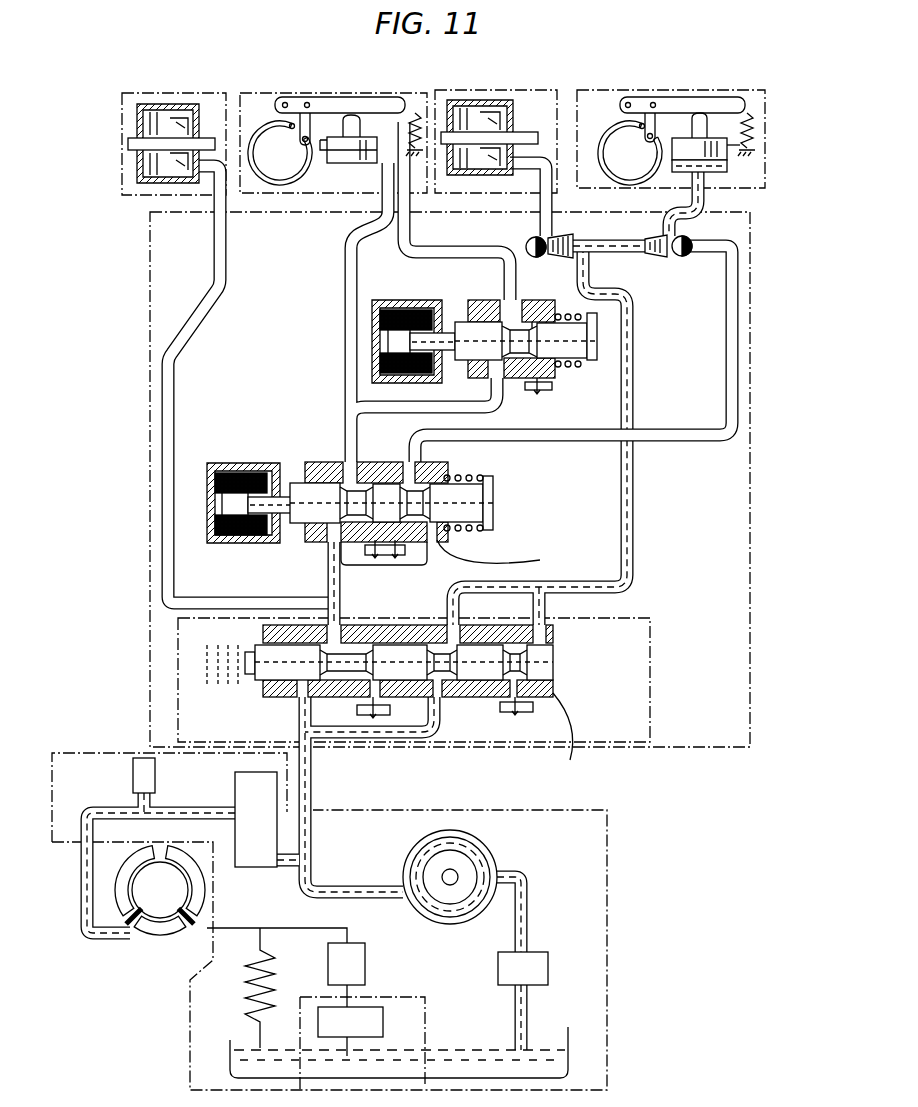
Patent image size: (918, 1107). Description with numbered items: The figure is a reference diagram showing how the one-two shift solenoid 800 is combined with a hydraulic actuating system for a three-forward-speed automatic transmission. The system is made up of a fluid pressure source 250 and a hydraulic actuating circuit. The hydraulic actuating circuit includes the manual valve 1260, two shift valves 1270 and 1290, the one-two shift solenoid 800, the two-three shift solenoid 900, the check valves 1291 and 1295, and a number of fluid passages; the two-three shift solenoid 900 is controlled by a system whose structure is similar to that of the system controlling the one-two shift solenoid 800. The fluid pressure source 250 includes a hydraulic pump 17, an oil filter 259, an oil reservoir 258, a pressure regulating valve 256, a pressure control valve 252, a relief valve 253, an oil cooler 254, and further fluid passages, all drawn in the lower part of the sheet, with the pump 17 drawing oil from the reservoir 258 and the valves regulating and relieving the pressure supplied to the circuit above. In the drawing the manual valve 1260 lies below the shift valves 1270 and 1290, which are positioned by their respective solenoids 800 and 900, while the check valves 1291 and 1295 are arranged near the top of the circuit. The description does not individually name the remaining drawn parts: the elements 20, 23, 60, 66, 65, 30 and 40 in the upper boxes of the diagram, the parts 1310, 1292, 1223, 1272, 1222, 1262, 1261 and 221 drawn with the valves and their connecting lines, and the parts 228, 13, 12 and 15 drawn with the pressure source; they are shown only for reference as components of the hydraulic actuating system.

The front clutch servo 20 is at (160, 123).
The clutch piston 23 is at (181, 104).
The solenoid valve assembly 60 is at (332, 128).
The solenoid 66 is at (373, 128).
The return spring ring 65 is at (316, 168).
The rear clutch servo 30 is at (463, 92).
The solenoid valve assembly 40 is at (648, 93).
The 2-3 shift solenoid 900 is at (427, 292).
The fluid passage 1310 is at (517, 300).
The check valve 1291 is at (563, 236).
The check valve 1295 is at (633, 258).
The 2-3 shift valve spool 1292 is at (565, 370).
The shift valve 1290 is at (495, 377).
The 1-2 shift solenoid 800 is at (240, 450).
The fluid passage 1223 is at (345, 437).
The 1-2 shift valve spool 1272 is at (497, 500).
The shift valve 1270 is at (406, 499).
The fluid passage 1222 is at (340, 607).
The manual valve spool 1262 is at (537, 652).
The manual valve 1260 is at (425, 704).
The manual valve drain port 1261 is at (475, 697).
The line pressure passage 221 is at (298, 726).
The fluid pressure source 250 is at (169, 797).
The relief valve 253 is at (133, 778).
The pressure control valve 252 is at (235, 781).
The suction passage 228 is at (80, 900).
The pump housing 13 is at (174, 909).
The pump rotor 12 is at (205, 896).
The pump vane 15 is at (147, 934).
The oil cooler 254 is at (246, 993).
The pressure regulating valve 256 is at (366, 960).
The hydraulic pump 17 is at (490, 852).
The oil filter 259 is at (533, 950).
The oil reservoir 258 is at (566, 1028).